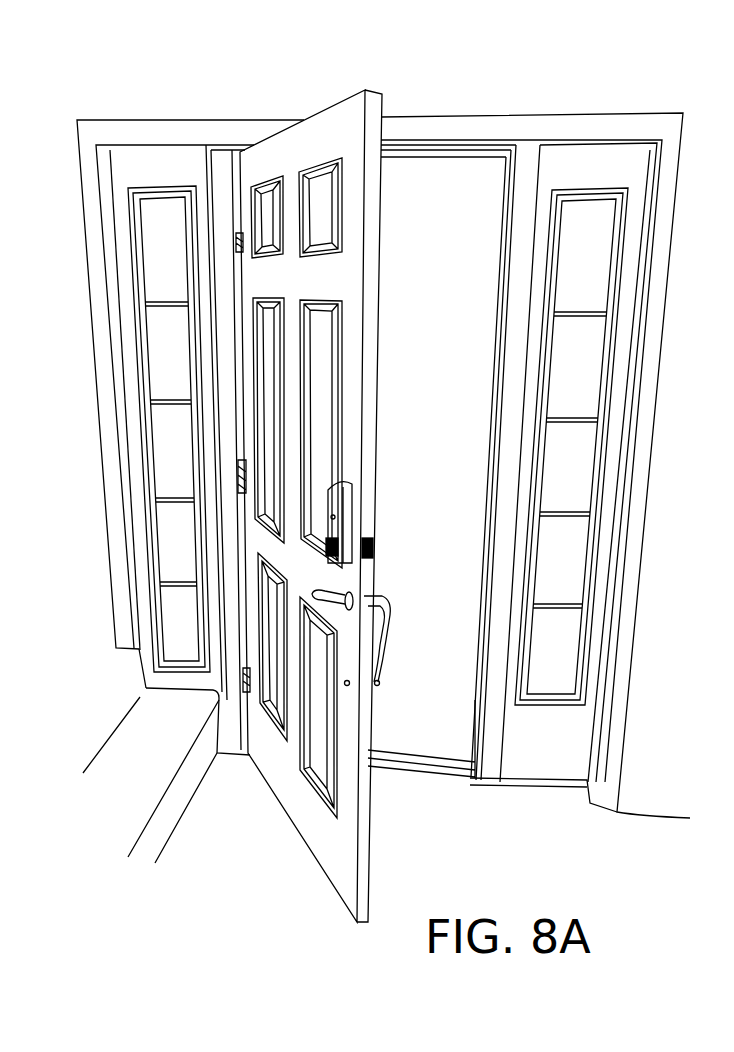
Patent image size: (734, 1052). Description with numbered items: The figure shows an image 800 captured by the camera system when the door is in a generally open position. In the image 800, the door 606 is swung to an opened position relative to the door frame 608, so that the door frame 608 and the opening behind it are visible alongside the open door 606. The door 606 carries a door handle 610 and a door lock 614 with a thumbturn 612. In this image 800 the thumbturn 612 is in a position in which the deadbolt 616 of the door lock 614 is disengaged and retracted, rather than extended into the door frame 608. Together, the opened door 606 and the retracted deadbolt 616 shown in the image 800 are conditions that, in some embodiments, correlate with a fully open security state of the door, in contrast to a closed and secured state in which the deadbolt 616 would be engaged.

The image 800 is at (154, 99).
The door 606 is at (367, 150).
The door frame 608 is at (522, 170).
The door handle 610 is at (313, 593).
The thumbturn 612 is at (332, 545).
The door lock 614 is at (348, 500).
The deadbolt 616 is at (377, 547).